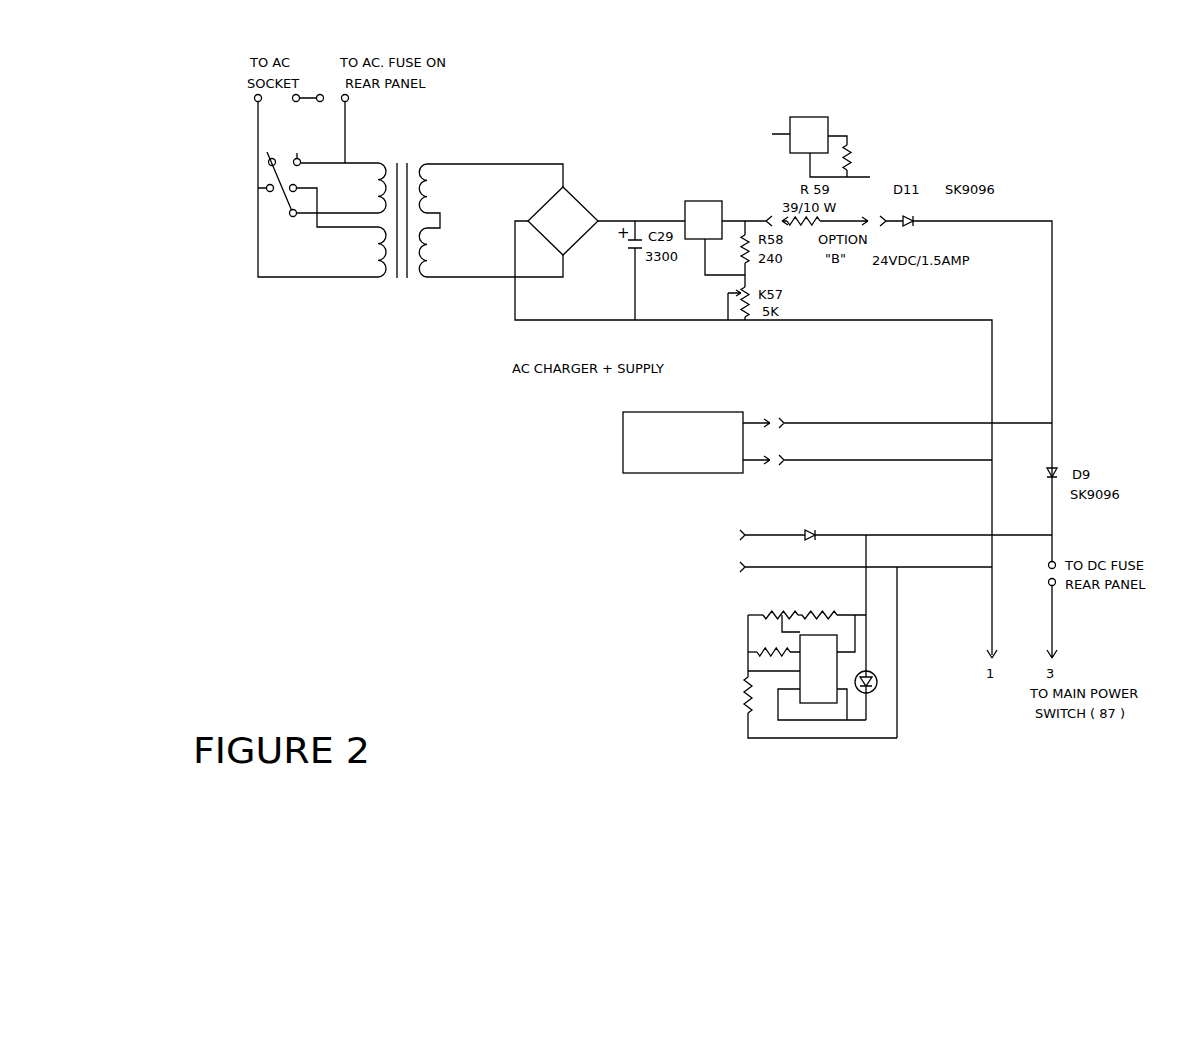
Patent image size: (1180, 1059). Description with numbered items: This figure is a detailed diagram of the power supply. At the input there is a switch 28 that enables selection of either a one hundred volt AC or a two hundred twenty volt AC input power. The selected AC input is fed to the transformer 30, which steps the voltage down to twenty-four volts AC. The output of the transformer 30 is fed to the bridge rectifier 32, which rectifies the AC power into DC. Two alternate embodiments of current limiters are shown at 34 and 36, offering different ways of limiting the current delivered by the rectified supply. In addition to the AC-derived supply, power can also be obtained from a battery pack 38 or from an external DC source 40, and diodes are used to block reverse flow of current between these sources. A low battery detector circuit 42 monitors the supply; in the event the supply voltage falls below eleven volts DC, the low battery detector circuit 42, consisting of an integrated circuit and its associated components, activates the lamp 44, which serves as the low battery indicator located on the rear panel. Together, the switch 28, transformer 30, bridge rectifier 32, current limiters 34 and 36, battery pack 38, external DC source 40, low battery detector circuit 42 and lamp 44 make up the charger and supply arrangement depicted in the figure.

The switch 28 is at (306, 134).
The transformer 30 is at (427, 150).
The bridge rectifier 32 is at (583, 193).
The current limiter 34 is at (685, 198).
The current limiter 36 is at (828, 123).
The battery pack 38 is at (722, 403).
The external DC source 40 is at (633, 570).
The low battery detector circuit 42 is at (770, 750).
The lamp 44 is at (878, 697).